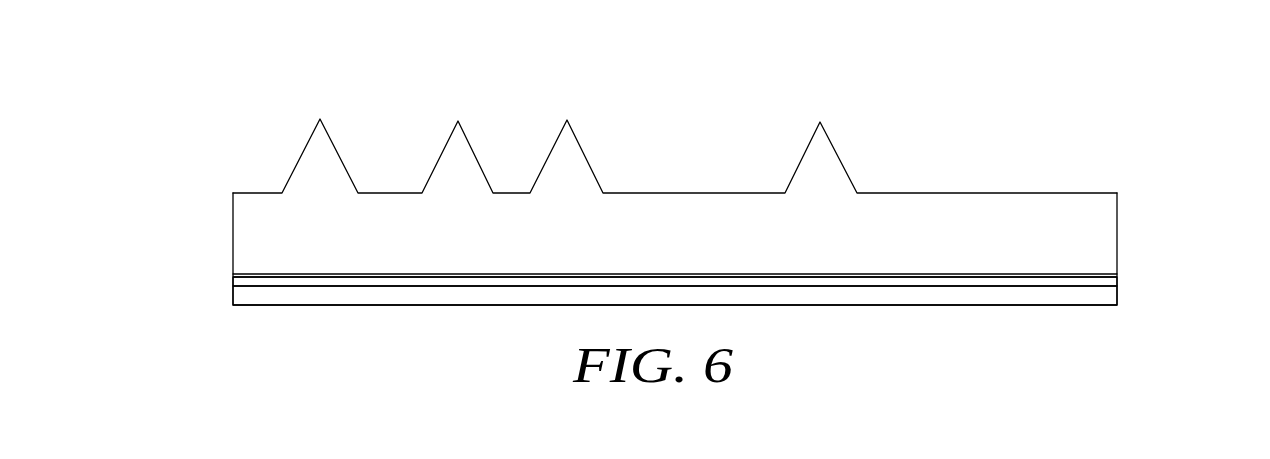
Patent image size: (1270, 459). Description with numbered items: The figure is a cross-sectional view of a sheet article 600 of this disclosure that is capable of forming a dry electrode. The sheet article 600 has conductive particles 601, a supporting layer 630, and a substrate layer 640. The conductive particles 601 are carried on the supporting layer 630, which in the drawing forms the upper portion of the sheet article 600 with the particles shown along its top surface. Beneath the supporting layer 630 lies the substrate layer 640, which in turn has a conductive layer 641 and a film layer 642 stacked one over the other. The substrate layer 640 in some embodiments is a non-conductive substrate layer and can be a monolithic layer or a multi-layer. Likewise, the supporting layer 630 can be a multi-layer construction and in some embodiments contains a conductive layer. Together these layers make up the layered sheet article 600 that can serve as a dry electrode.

The sheet article 600 is at (1118, 70).
The conductive particles 601 is at (820, 122).
The supporting layer 630 is at (199, 193).
The substrate layer 640 is at (177, 277).
The conductive layer 641 is at (1117, 279).
The film layer 642 is at (1117, 293).